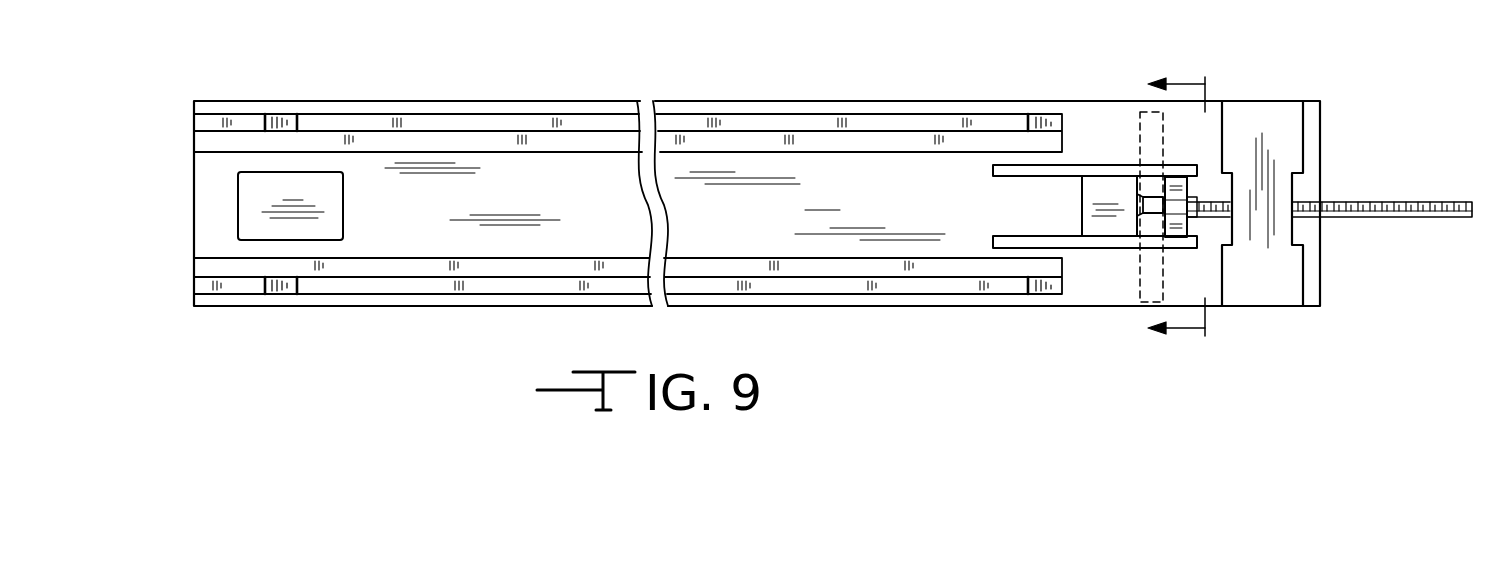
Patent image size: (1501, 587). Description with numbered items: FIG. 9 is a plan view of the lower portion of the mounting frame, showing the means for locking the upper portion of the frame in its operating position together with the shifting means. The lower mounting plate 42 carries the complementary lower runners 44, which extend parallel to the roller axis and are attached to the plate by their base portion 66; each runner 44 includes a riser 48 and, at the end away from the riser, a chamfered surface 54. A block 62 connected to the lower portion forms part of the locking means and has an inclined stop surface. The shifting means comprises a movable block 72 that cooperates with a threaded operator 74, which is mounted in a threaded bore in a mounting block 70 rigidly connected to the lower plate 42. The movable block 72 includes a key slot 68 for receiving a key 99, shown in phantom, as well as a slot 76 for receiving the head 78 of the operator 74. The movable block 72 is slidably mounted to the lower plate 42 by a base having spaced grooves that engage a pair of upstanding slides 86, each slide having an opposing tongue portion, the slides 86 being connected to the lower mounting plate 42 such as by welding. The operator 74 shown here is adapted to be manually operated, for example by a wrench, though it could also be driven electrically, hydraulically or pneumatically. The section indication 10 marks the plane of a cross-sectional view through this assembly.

The section line 10- 10 is at (1174, 207).
The lower mounting plate 42 is at (1103, 293).
The lower runner 44 is at (795, 122).
The riser 48 is at (292, 122).
The chamfered surface 54 is at (1046, 122).
The block 62 is at (245, 207).
The base portion 66 is at (495, 142).
The key slot 68 is at (1158, 228).
The mounting block 70 is at (1285, 122).
The movable block 72 is at (1092, 207).
The threaded operator 74 is at (1378, 200).
The slot 76 is at (1163, 228).
The head 78 is at (1153, 197).
The upstanding slides 86 is at (993, 175).
The key 99 is at (1133, 118).